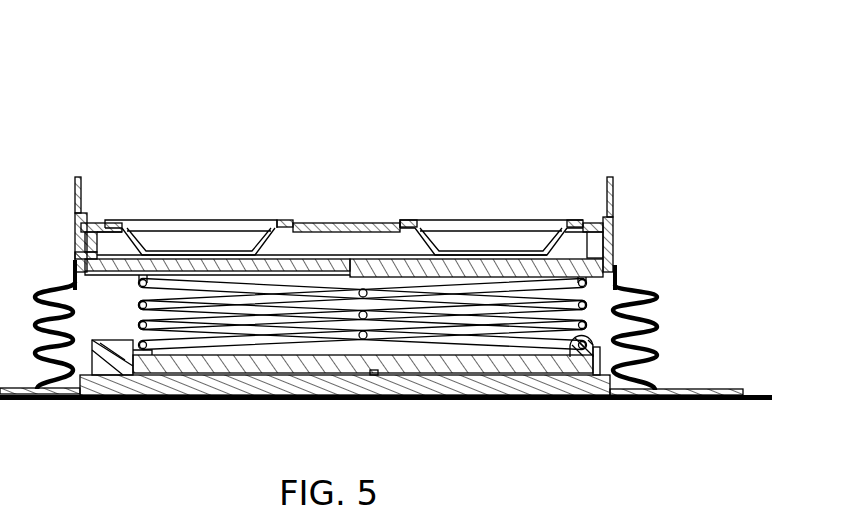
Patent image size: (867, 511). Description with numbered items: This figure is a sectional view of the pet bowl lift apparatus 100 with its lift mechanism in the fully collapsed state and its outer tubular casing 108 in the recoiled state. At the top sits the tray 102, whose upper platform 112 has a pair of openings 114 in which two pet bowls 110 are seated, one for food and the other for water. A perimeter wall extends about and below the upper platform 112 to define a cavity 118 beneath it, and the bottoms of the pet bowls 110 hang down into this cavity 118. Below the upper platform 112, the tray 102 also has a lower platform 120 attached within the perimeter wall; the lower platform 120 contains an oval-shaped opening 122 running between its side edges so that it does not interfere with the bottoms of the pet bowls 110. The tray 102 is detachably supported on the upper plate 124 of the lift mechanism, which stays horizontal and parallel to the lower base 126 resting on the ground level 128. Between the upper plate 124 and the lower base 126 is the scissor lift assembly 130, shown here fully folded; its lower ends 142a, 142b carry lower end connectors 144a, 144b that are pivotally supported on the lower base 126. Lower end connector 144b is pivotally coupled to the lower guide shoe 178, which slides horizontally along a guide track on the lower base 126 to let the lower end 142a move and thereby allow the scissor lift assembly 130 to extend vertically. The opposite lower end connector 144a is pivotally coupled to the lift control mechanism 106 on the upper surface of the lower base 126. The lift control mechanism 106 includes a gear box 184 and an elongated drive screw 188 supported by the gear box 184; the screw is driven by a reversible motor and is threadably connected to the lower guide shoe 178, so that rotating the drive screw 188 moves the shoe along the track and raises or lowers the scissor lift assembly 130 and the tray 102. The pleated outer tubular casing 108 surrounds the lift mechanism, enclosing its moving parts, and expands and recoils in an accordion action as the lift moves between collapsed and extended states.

The pet bowl lift apparatus 100 is at (632, 78).
The tray 102 is at (626, 206).
The lift control mechanism 106 is at (110, 398).
The outer tubular casing 108 is at (663, 319).
The pet bowl 110 is at (160, 217).
The upper platform 112 is at (301, 223).
The openings 114 is at (283, 219).
The cavity 118 is at (412, 240).
The lower platform 120 is at (93, 252).
The oval-shaped opening 122 is at (378, 253).
The upper plate 124 is at (314, 266).
The lower base 126 is at (114, 397).
The ground level 128 is at (757, 395).
The scissor lift assembly 130 is at (604, 303).
The lower end 142a is at (158, 347).
The lower end 142b is at (563, 350).
The lower end connector 144a is at (137, 343).
The lower end connector 144b is at (585, 352).
The lower guide shoe 178 is at (598, 362).
The gear box 184 is at (107, 366).
The elongated drive screw 188 is at (322, 366).